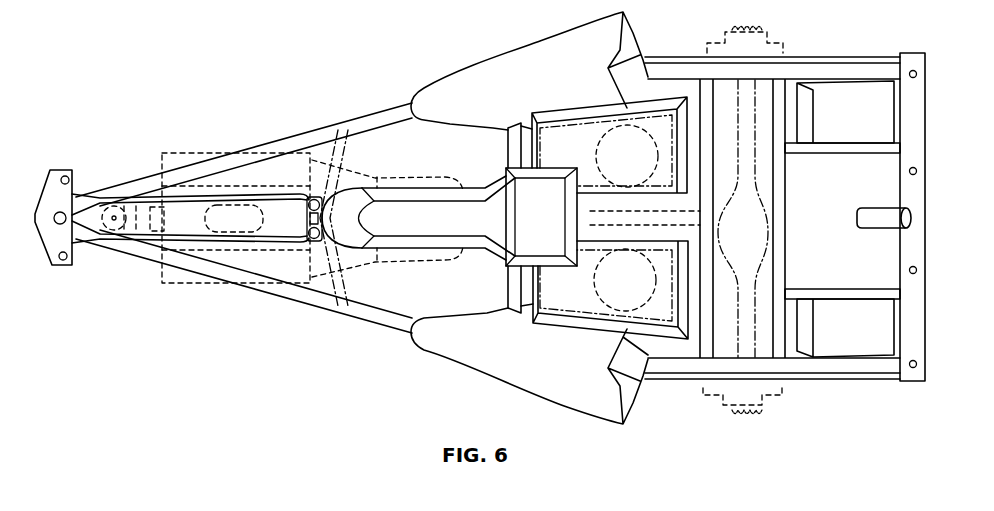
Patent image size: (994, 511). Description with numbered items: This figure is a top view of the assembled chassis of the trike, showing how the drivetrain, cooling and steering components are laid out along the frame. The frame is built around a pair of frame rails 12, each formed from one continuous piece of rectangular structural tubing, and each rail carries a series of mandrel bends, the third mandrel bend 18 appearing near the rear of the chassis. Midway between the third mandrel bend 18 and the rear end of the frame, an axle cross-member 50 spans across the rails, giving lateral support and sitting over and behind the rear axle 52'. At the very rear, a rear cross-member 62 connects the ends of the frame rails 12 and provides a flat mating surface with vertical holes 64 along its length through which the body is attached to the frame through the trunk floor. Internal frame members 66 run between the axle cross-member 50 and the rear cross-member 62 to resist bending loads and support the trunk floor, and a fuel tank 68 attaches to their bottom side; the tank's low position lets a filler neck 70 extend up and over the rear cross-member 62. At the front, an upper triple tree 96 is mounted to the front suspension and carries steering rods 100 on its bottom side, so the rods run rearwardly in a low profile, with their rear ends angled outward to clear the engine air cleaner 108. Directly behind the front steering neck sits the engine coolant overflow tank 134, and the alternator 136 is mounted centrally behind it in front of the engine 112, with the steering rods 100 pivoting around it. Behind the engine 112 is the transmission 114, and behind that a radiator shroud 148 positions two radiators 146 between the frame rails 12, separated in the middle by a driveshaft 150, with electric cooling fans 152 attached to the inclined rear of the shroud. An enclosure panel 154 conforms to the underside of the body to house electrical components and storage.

The upper triple tree 96 is at (68, 170).
The steering rods 100 is at (192, 237).
The engine air cleaner 108 is at (257, 205).
The engine coolant overflow tank 134 is at (115, 224).
The alternator 136 is at (138, 234).
The engine 112 is at (175, 285).
The enclosure panel 154 is at (495, 186).
The transmission 114 is at (378, 263).
The radiator shroud 148 is at (443, 365).
The radiators 146 is at (560, 137).
The driveshaft 150 is at (592, 210).
The electric cooling fans 152 is at (627, 170).
The third mandrel bend 18 is at (653, 58).
The frame rails 12 is at (804, 57).
The axle cross-member 50 is at (781, 128).
The hitch coupler 52' is at (737, 227).
The internal frame members 66 is at (832, 150).
The filler neck 70 is at (890, 213).
The vertical holes 64 is at (911, 169).
The fuel tank 68 is at (838, 335).
The rear cross-member 62 is at (914, 383).